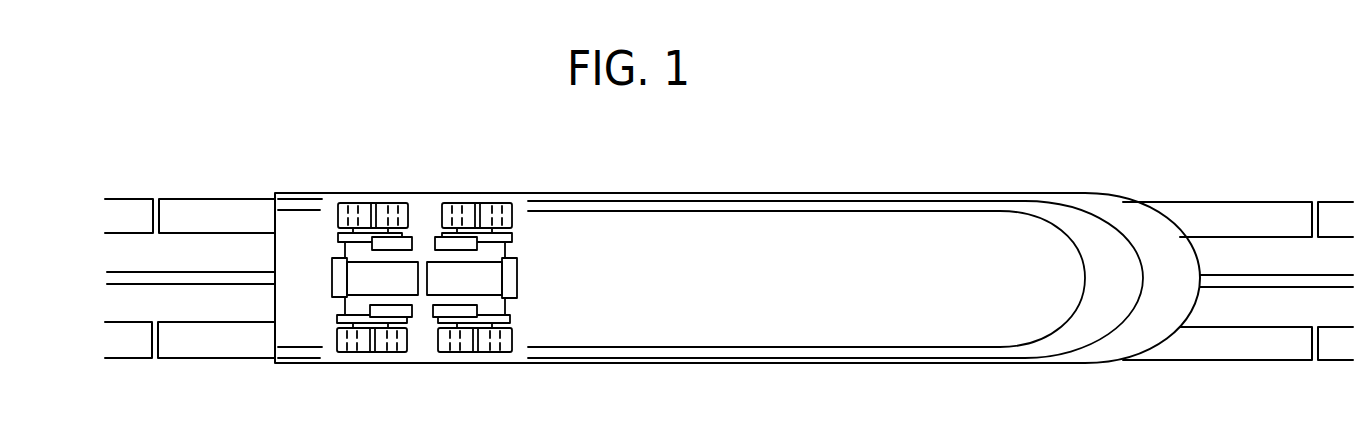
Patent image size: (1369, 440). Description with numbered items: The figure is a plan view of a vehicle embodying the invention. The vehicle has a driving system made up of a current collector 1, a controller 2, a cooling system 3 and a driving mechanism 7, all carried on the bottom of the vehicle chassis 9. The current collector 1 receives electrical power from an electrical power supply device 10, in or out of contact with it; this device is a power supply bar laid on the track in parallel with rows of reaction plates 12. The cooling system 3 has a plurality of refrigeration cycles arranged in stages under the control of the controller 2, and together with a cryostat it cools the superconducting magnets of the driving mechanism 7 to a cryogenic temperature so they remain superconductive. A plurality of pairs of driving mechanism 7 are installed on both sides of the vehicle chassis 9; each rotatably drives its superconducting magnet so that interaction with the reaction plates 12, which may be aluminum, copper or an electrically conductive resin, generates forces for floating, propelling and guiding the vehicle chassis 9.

The current collector 1 is at (477, 275).
The controller 2 is at (510, 283).
The cooling system 3 is at (510, 319).
The driving mechanism 7 is at (386, 203).
The vehicle chassis 9 is at (860, 228).
The electrical power supply device 10 is at (1245, 280).
The reaction plates 12 is at (232, 215).